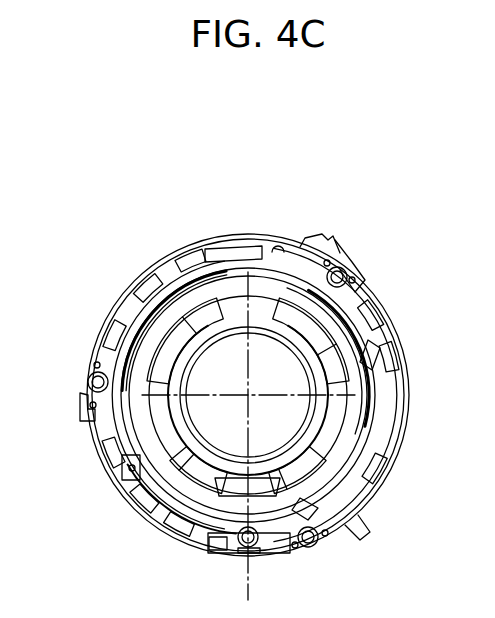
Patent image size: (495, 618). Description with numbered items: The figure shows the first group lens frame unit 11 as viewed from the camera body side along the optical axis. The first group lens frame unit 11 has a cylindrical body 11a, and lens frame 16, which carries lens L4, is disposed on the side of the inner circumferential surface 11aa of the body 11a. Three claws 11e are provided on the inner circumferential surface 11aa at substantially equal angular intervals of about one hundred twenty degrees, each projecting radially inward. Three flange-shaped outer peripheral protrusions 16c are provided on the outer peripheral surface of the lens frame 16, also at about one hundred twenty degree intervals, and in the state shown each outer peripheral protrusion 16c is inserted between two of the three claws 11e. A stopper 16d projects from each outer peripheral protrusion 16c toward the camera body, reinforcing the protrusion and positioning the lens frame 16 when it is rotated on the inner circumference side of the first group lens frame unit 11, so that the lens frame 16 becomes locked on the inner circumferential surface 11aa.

The first group lens frame unit 11 is at (150, 228).
The body 11a is at (353, 290).
The inner circumferential surface 11aa is at (185, 460).
The claws 11e is at (155, 300).
The lens frame 16 is at (281, 302).
The outer peripheral protrusions 16c is at (247, 265).
The stopper 16d is at (92, 372).
The lens L4 is at (238, 350).